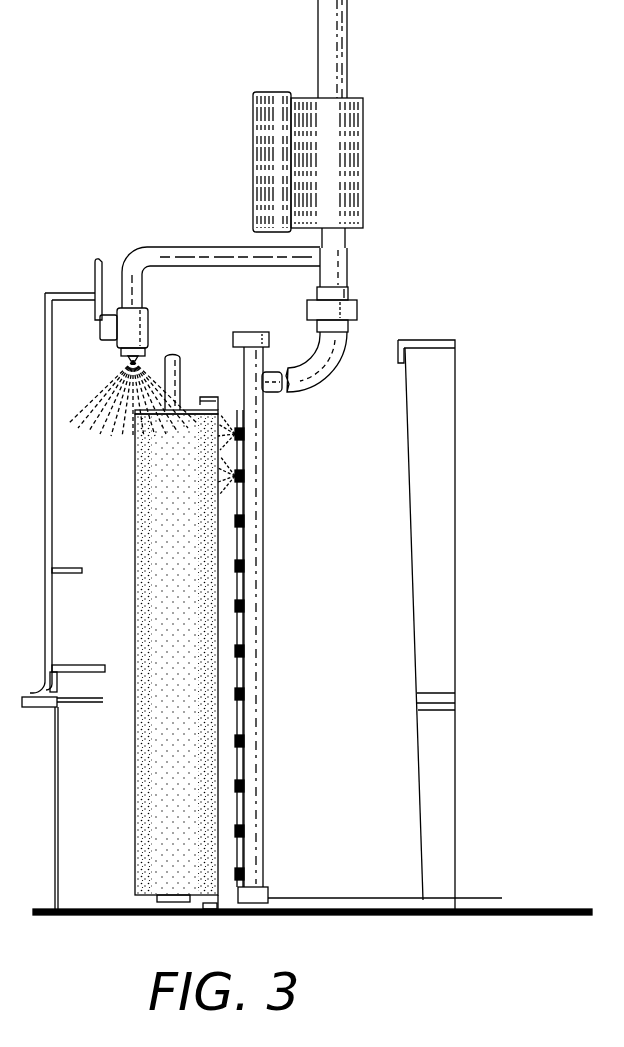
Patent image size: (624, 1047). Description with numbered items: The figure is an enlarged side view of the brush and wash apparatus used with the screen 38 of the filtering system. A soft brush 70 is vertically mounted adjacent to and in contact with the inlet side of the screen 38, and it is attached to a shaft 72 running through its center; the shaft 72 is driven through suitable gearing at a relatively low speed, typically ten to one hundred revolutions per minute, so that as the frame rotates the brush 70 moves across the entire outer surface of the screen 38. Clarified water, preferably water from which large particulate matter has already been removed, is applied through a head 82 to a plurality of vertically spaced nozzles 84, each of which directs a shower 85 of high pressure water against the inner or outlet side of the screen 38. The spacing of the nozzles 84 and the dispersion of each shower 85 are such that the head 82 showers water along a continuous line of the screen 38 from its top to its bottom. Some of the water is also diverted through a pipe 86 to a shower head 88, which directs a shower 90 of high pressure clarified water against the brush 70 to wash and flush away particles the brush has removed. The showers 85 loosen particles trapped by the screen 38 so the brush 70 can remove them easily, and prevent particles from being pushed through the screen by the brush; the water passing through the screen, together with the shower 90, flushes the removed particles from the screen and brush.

The pipe 86 is at (176, 248).
The shower head 88 is at (150, 326).
The shower of high pressure clarified water 90 is at (113, 377).
The shaft 72 is at (181, 372).
The shower 85 is at (225, 420).
The head 82 is at (262, 511).
The nozzles 84 is at (246, 522).
The soft brush 70 is at (135, 606).
The screen 38 is at (244, 790).